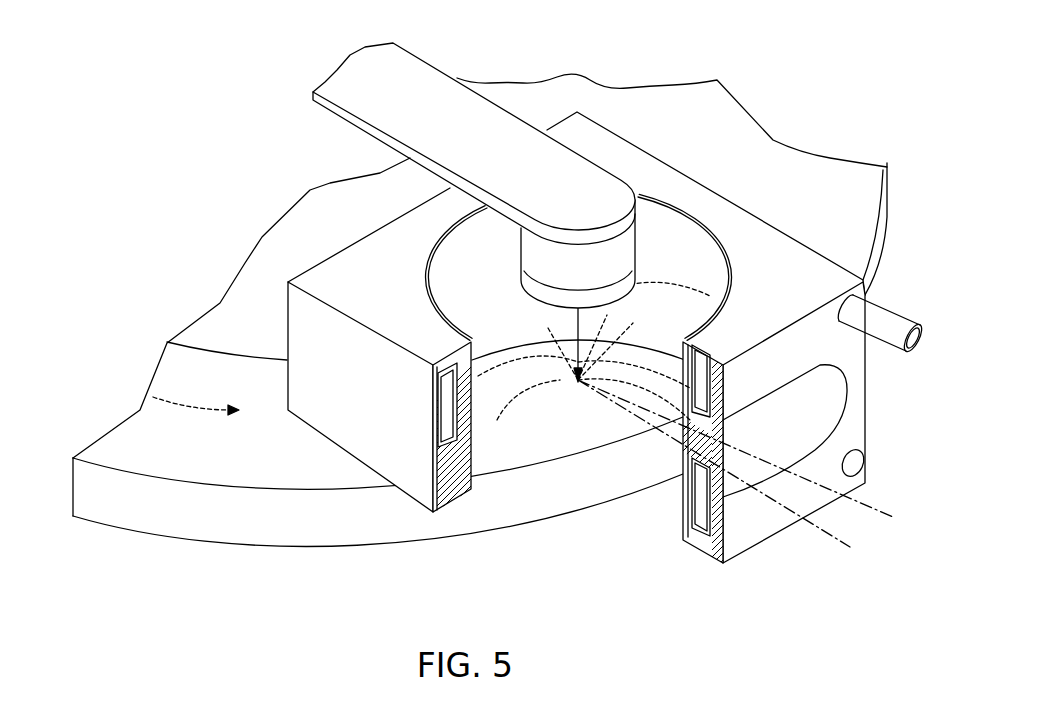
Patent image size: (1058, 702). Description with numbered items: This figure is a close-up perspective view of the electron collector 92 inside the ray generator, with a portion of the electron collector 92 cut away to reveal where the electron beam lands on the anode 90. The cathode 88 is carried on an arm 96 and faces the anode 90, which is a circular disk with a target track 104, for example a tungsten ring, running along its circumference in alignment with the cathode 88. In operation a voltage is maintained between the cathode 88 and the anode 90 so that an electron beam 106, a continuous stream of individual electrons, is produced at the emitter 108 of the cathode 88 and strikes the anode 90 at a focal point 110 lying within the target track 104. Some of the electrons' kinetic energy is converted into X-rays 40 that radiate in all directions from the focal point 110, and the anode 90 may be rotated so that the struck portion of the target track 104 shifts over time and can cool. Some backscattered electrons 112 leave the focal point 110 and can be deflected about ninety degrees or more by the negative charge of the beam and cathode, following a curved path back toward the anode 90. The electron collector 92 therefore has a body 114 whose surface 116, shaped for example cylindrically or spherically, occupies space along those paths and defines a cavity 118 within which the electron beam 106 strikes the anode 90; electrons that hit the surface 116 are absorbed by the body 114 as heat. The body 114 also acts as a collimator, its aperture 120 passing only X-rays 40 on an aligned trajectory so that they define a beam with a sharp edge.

The X-rays 40 is at (828, 546).
The cathode 88 is at (620, 248).
The anode 90 is at (146, 508).
The electron collector 92 is at (152, 392).
The arm 96 is at (410, 66).
The target track 104 is at (124, 447).
The electron beam 106 is at (562, 322).
The emitter 108 is at (597, 287).
The focal point 110 is at (577, 388).
The backscattered electrons 112 is at (501, 428).
The body 114 is at (607, 127).
The surface 116 is at (688, 247).
The cavity 118 is at (708, 267).
The aperture 120 is at (847, 377).